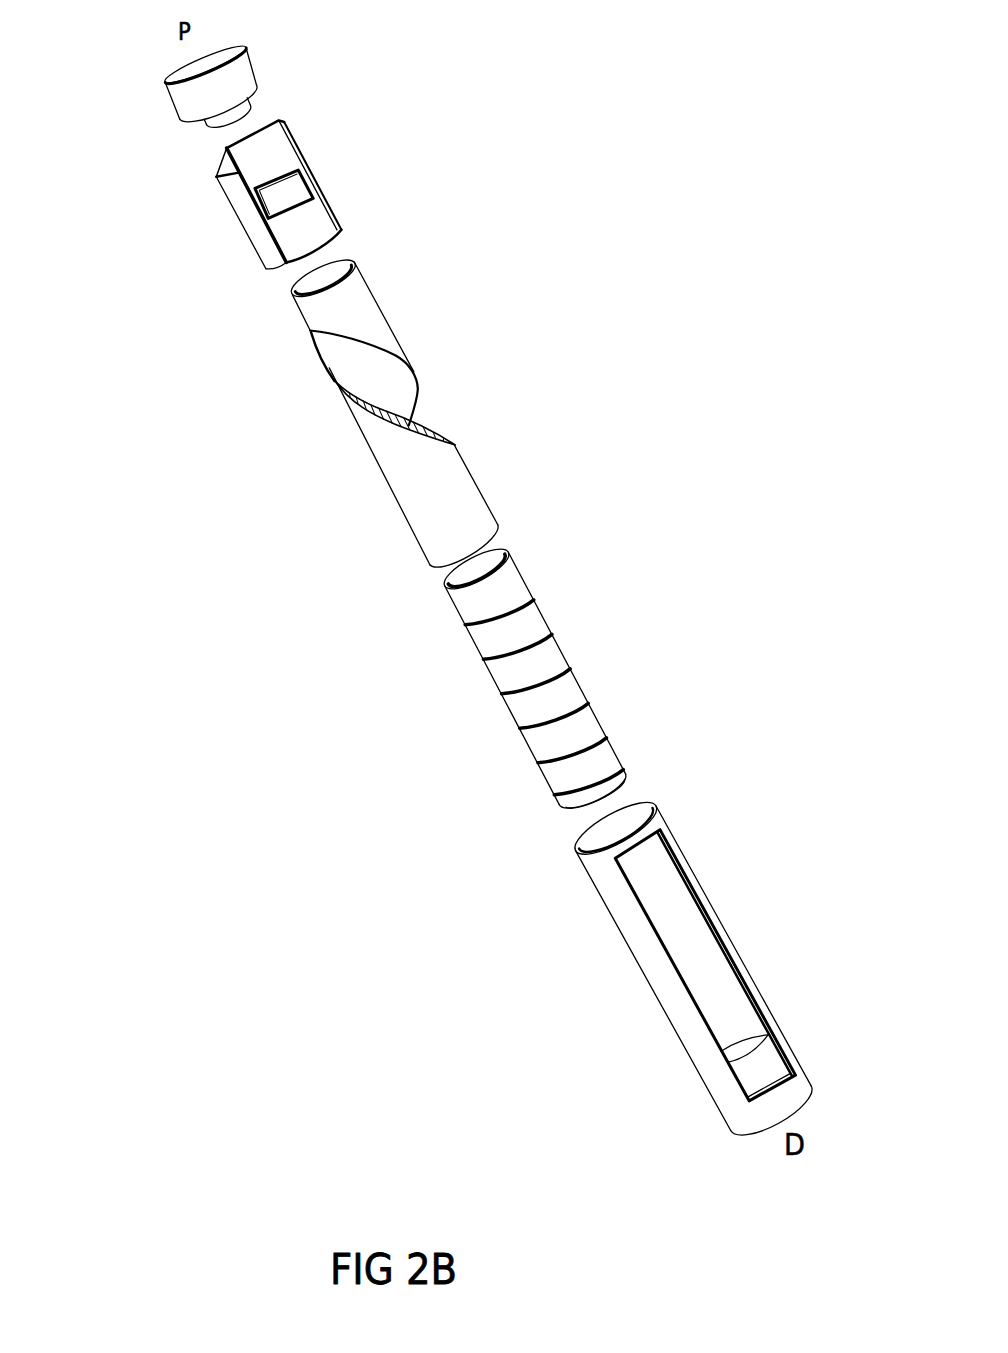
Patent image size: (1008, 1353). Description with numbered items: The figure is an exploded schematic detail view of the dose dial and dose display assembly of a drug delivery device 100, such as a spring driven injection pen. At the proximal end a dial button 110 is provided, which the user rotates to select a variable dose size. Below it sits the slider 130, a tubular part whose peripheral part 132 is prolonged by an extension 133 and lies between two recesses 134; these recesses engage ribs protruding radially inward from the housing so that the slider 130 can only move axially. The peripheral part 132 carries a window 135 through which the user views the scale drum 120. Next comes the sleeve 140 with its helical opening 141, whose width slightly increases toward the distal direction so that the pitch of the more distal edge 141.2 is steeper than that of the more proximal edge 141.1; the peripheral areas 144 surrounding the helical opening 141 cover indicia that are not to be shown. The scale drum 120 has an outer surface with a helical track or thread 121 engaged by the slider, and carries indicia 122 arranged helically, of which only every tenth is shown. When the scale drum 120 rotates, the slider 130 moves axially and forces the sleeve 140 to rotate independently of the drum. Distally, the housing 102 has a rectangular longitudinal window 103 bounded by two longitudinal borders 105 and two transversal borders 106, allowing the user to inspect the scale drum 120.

The drug delivery device 100 is at (567, 147).
The dial button 110 is at (186, 100).
The slider 130 is at (273, 194).
The extension 133 is at (275, 138).
The recesses 134 is at (335, 215).
The window 135 is at (292, 190).
The peripheral part 132 is at (270, 268).
The peripheral areas 144 is at (357, 292).
The helical opening 141 is at (380, 378).
The more proximal edge 141.1 is at (370, 347).
The more distal edge 141.2 is at (352, 410).
The sleeve 140 is at (380, 397).
The scale drum 120 is at (593, 680).
The helical track or thread 121 is at (532, 598).
The indicia 122 is at (548, 655).
The housing 102 is at (686, 972).
The transversal borders 106 is at (643, 837).
The longitudinal borders 105 is at (657, 928).
The longitudinal window 103 is at (728, 995).